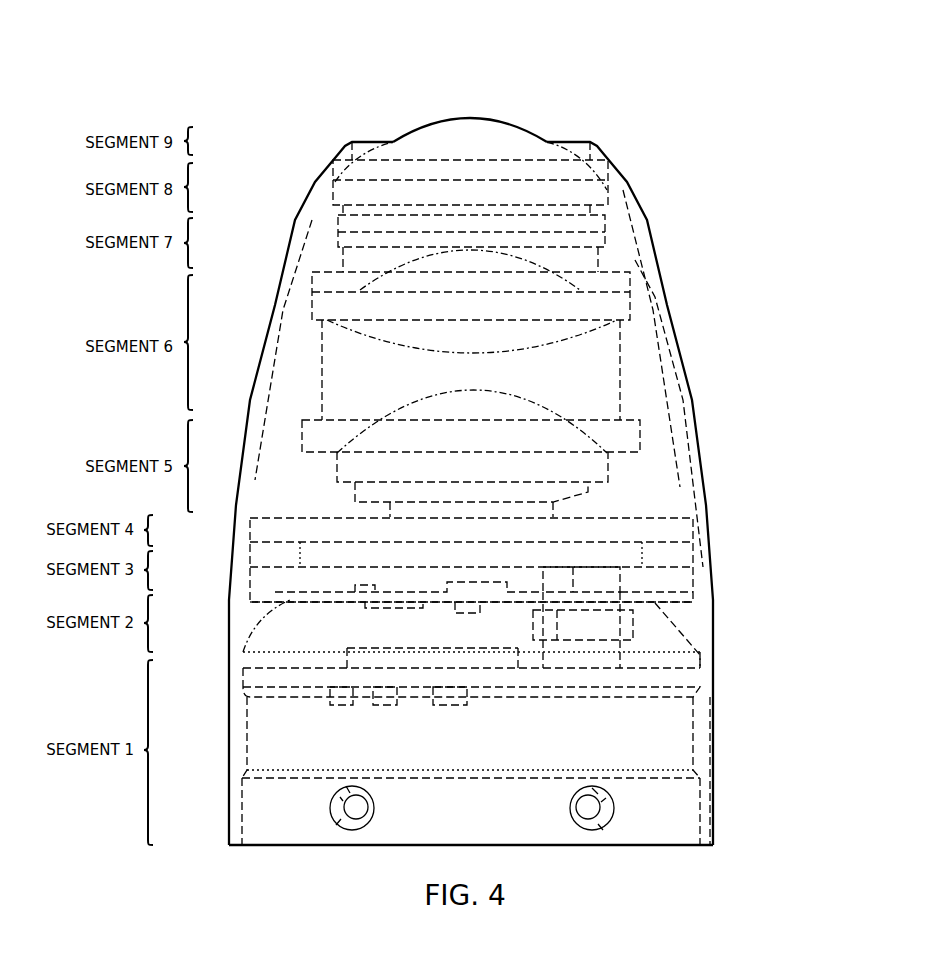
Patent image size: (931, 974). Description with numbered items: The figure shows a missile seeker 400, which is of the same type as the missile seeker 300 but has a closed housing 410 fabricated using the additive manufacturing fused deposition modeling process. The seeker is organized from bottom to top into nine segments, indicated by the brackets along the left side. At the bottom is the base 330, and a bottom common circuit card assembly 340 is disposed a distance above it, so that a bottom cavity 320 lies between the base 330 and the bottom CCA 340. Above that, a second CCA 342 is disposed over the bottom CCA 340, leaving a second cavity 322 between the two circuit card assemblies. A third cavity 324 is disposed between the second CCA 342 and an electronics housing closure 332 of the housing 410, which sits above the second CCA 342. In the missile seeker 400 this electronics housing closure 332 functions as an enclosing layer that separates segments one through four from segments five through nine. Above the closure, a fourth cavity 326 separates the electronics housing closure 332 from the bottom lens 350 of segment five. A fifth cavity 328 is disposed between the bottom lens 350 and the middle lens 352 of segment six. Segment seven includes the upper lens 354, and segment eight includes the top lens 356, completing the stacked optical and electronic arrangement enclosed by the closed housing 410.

The missile seeker 300 is at (616, 74).
The missile seeker 400 is at (700, 440).
The closed housing 410 is at (315, 182).
The top lens 356 is at (612, 192).
The upper lens 354 is at (607, 242).
The middle lens 352 is at (633, 305).
The bottom lens 350 is at (547, 398).
The fifth cavity 328 is at (330, 375).
The fourth cavity 326 is at (365, 500).
The electronics housing closure 332 is at (690, 528).
The second CCA 342 is at (700, 640).
The bottom common circuit card assembly 340 is at (700, 690).
The base 330 is at (702, 826).
The third cavity 324 is at (255, 585).
The second cavity 322 is at (292, 626).
The bottom cavity 320 is at (255, 742).